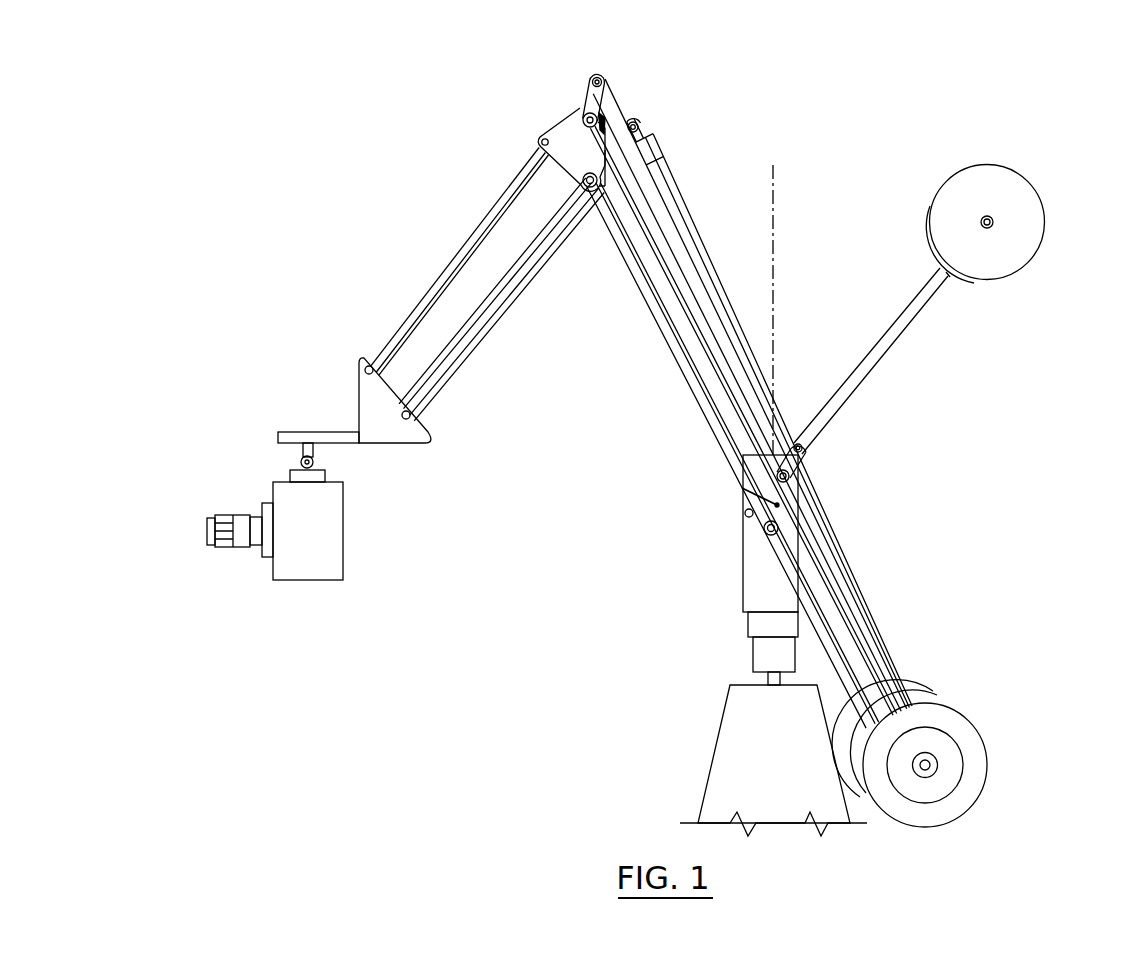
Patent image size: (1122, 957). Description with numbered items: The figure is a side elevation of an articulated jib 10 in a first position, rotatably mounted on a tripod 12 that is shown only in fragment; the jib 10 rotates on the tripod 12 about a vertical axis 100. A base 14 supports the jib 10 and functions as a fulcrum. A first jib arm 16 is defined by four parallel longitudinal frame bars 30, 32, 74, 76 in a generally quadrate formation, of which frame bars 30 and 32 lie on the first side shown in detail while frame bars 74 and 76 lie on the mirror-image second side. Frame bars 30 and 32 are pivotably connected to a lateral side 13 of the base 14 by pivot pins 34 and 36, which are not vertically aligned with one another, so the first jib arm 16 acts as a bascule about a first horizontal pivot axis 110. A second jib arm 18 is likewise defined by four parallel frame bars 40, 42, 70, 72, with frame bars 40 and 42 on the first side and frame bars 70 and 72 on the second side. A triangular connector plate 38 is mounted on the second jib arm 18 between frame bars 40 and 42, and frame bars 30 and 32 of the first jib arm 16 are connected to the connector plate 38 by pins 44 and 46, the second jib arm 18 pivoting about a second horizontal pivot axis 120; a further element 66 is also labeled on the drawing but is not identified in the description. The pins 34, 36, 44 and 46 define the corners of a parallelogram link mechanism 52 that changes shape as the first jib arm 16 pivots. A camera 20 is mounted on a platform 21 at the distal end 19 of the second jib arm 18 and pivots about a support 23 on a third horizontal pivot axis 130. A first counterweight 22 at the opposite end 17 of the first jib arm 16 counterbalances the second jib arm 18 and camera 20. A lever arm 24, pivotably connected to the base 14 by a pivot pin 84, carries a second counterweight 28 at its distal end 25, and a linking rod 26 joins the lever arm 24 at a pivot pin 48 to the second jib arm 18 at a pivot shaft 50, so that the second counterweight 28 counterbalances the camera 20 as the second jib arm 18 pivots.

The articulated jib 10 is at (335, 72).
The tripod 12 is at (712, 757).
The lateral side 13 is at (760, 560).
The base 14 is at (742, 597).
The first jib arm 16 is at (772, 403).
The end 17 is at (913, 694).
The second jib arm 18 is at (488, 284).
The distal end 19 is at (428, 422).
The camera 20 is at (308, 565).
The platform 21 is at (307, 436).
The first counterweight 22 is at (949, 729).
The support 23 is at (302, 460).
The lever arm 24 is at (900, 361).
The distal end 25 is at (948, 280).
The linking rod 26 is at (683, 217).
The second counterweight 28 is at (1022, 215).
The longitudinal frame bar 30 is at (840, 637).
The longitudinal frame bar 32 is at (833, 572).
The pivot pin 34 is at (779, 526).
The pivot pin 36 is at (790, 476).
The triangular connector plate 38 is at (572, 142).
The longitudinal frame bar 40 is at (463, 340).
The longitudinal frame bar 42 is at (452, 262).
The pin 44 is at (607, 162).
The pin 46 is at (577, 92).
The pivot pin 48 is at (800, 440).
The pivot shaft 50 is at (618, 104).
The parallelogram link mechanism 52 is at (680, 338).
The plate hole 66 is at (540, 138).
The longitudinal frame bar 70 is at (447, 378).
The longitudinal frame bar 72 is at (442, 292).
The longitudinal frame bar 74 is at (877, 700).
The longitudinal frame bar 76 is at (837, 610).
The pivot pin 84 is at (746, 512).
The vertical axis 100 is at (776, 178).
The first horizontal pivot axis 110 is at (742, 488).
The second horizontal pivot axis 120 is at (582, 186).
The third horizontal pivot axis 130 is at (314, 461).